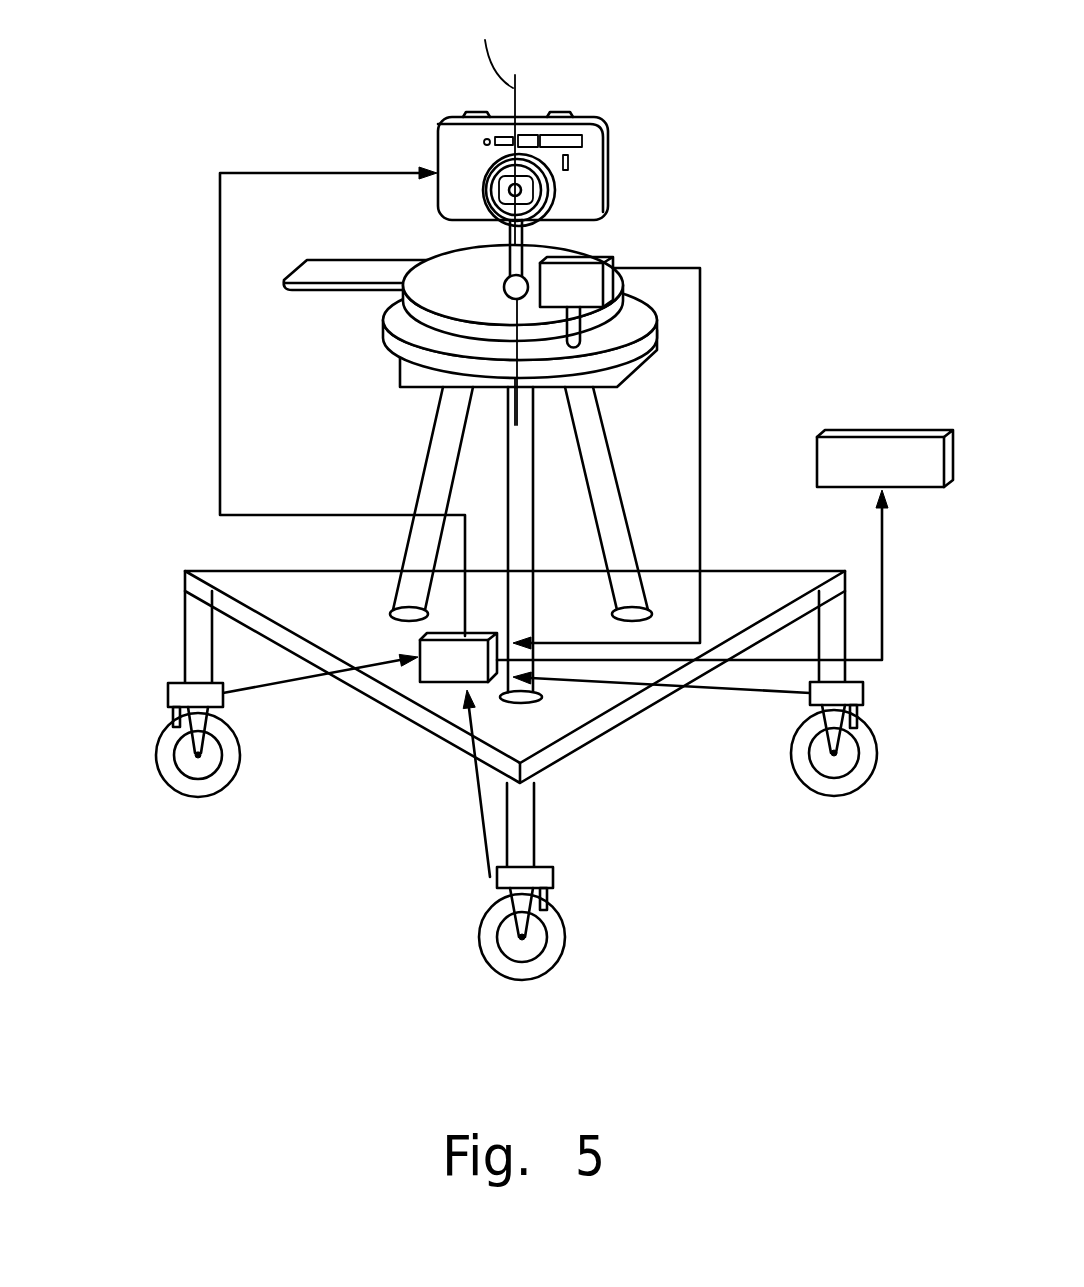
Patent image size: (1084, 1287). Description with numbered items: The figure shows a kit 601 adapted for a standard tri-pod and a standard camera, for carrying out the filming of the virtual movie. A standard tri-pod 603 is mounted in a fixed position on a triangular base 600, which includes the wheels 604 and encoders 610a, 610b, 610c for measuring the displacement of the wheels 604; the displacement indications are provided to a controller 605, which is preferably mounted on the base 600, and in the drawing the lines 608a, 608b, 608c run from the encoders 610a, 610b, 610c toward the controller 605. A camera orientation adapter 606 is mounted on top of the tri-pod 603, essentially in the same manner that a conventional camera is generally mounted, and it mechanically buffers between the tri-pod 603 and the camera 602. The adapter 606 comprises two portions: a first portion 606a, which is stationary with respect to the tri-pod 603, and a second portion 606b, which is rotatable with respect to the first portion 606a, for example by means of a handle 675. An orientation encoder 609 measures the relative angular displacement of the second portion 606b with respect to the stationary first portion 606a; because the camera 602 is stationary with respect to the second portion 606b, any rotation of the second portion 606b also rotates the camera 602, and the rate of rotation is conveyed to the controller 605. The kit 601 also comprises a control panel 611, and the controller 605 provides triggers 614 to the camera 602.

The triangular base 600 is at (427, 697).
The kit 601 is at (155, 253).
The camera 602 is at (585, 118).
The standard tri-pod 603 is at (440, 462).
The wheels 604 is at (192, 777).
The controller 605 is at (458, 667).
The camera orientation adapter 606 is at (427, 248).
The first portion 606a is at (628, 328).
The second portion 606b is at (407, 293).
The caster control cable 608a is at (263, 687).
The caster control cable 608b is at (480, 838).
The caster control cable 608c is at (739, 692).
The orientation encoder 609 is at (580, 277).
The encoder 610a is at (163, 712).
The encoder 610b is at (550, 898).
The encoder 610c is at (857, 714).
The control panel 611 is at (864, 451).
The triggers 614 is at (220, 328).
The handle 675 is at (323, 275).